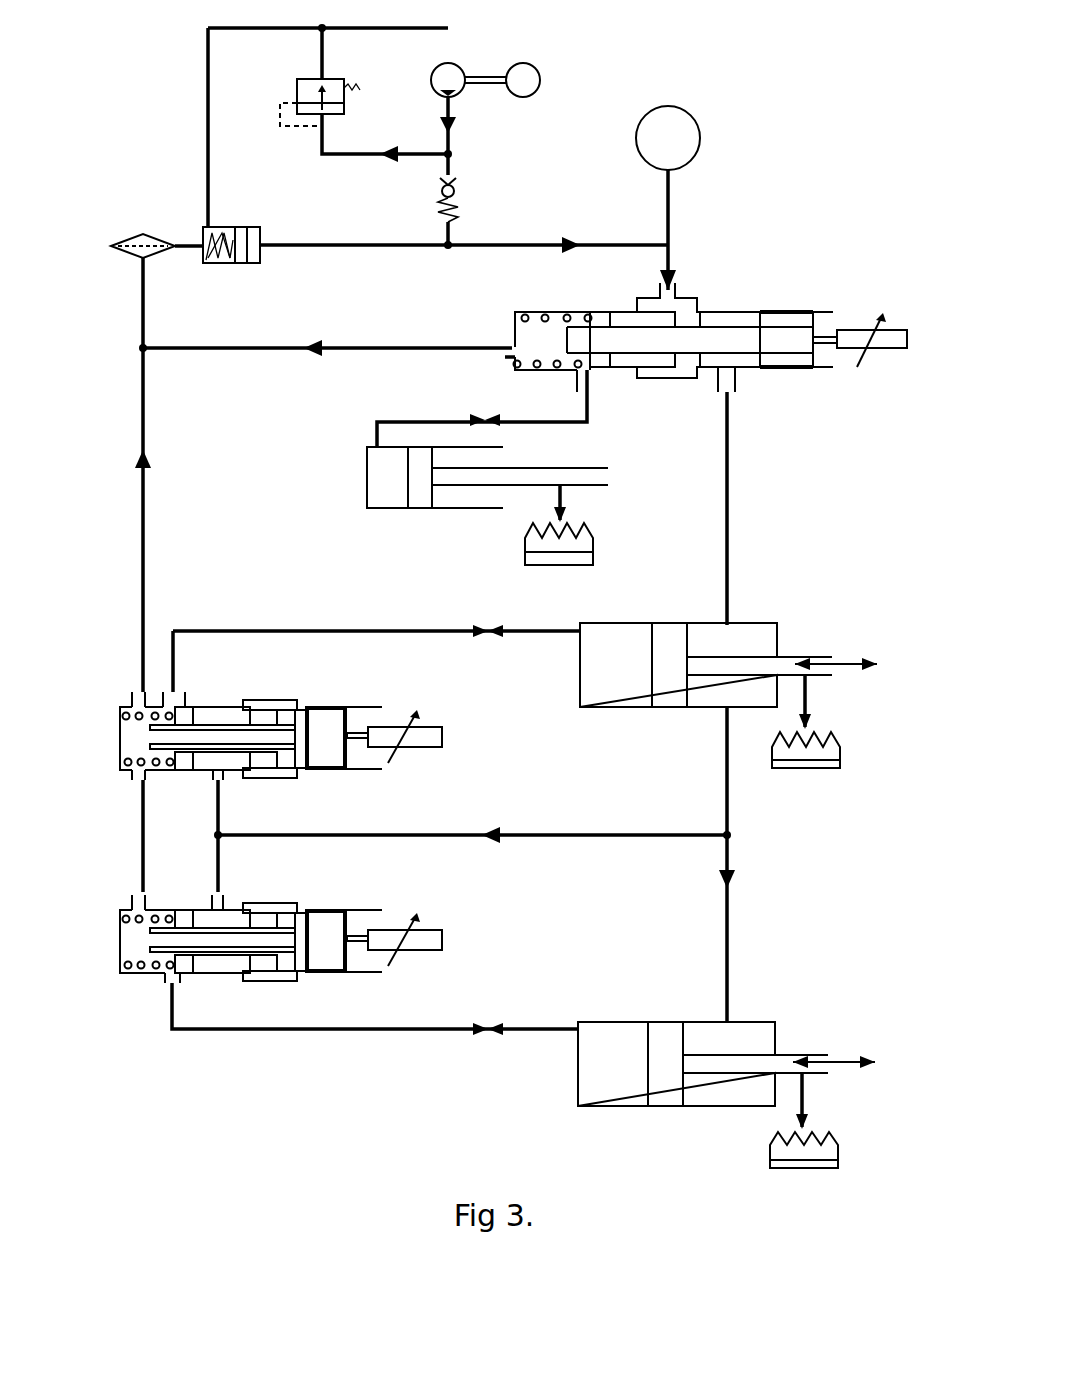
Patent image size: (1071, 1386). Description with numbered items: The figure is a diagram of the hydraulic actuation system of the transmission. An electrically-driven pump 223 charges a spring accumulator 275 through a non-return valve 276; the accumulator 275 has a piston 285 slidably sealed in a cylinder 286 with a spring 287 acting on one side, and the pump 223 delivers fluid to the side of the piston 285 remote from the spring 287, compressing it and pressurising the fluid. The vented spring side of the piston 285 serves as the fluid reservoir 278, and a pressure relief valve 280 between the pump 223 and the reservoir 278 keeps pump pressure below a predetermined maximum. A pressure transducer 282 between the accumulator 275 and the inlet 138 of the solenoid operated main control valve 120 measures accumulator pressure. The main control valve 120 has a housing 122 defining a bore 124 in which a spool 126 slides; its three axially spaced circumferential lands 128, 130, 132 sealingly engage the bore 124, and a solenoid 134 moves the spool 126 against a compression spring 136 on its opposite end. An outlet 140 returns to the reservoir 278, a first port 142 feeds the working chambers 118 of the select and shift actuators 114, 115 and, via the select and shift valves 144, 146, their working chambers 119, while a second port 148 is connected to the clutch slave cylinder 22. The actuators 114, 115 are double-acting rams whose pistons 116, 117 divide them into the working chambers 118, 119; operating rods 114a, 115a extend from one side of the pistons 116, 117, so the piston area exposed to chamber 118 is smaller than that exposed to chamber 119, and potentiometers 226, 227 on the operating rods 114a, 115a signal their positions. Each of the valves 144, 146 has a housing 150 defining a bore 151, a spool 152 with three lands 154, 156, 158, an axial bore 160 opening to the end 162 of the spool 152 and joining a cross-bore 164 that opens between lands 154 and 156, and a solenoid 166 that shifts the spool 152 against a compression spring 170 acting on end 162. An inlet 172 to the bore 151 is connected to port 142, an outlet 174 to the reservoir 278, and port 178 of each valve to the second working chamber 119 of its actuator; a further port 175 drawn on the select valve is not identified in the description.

The clutch slave cylinder 22 is at (367, 475).
The select actuator 114 is at (676, 1091).
The operating rod 114a is at (730, 1068).
The shift actuator 115 is at (694, 679).
The operating rod 115a is at (760, 660).
The piston 116 is at (658, 1100).
The piston 117 is at (668, 705).
The working chamber 118 is at (735, 632).
The working chamber 119 is at (595, 710).
The main control valve 120 is at (696, 342).
The housing 122 is at (792, 370).
The bore 124 is at (730, 318).
The spool 126 is at (815, 360).
The land 128 is at (800, 322).
The land 130 is at (672, 378).
The land 132 is at (602, 315).
The solenoid 134 is at (878, 348).
The compression spring 136 is at (545, 312).
The inlet 138 is at (674, 290).
The outlet 140 is at (510, 345).
The first port 142 is at (730, 392).
The select valve 144 is at (394, 880).
The shift valve 146 is at (370, 707).
The second port 148 is at (590, 388).
The housing 150 is at (352, 708).
The bore 151 is at (128, 758).
The spool 152 is at (338, 752).
The land 154 is at (320, 712).
The land 156 is at (268, 703).
The land 158 is at (212, 712).
The axial bore 160 is at (140, 722).
The end 162 is at (150, 738).
The cross-bore 164 is at (302, 728).
The solenoid 166 is at (430, 728).
The compression spring 170 is at (270, 820).
The inlet 172 is at (220, 778).
The outlet 174 is at (138, 700).
The port 175 is at (135, 780).
The port 178 is at (180, 700).
The electrically-driven pump 223 is at (452, 65).
The potentiometer 226 is at (775, 1156).
The potentiometer 227 is at (815, 767).
The spring accumulator 275 is at (240, 266).
The non-return valve 276 is at (462, 205).
The reservoir 278 is at (205, 230).
The pressure relief valve 280 is at (300, 90).
The pressure transducer 282 is at (688, 138).
The piston 285 is at (244, 228).
The cylinder 286 is at (258, 258).
The spring 287 is at (212, 263).